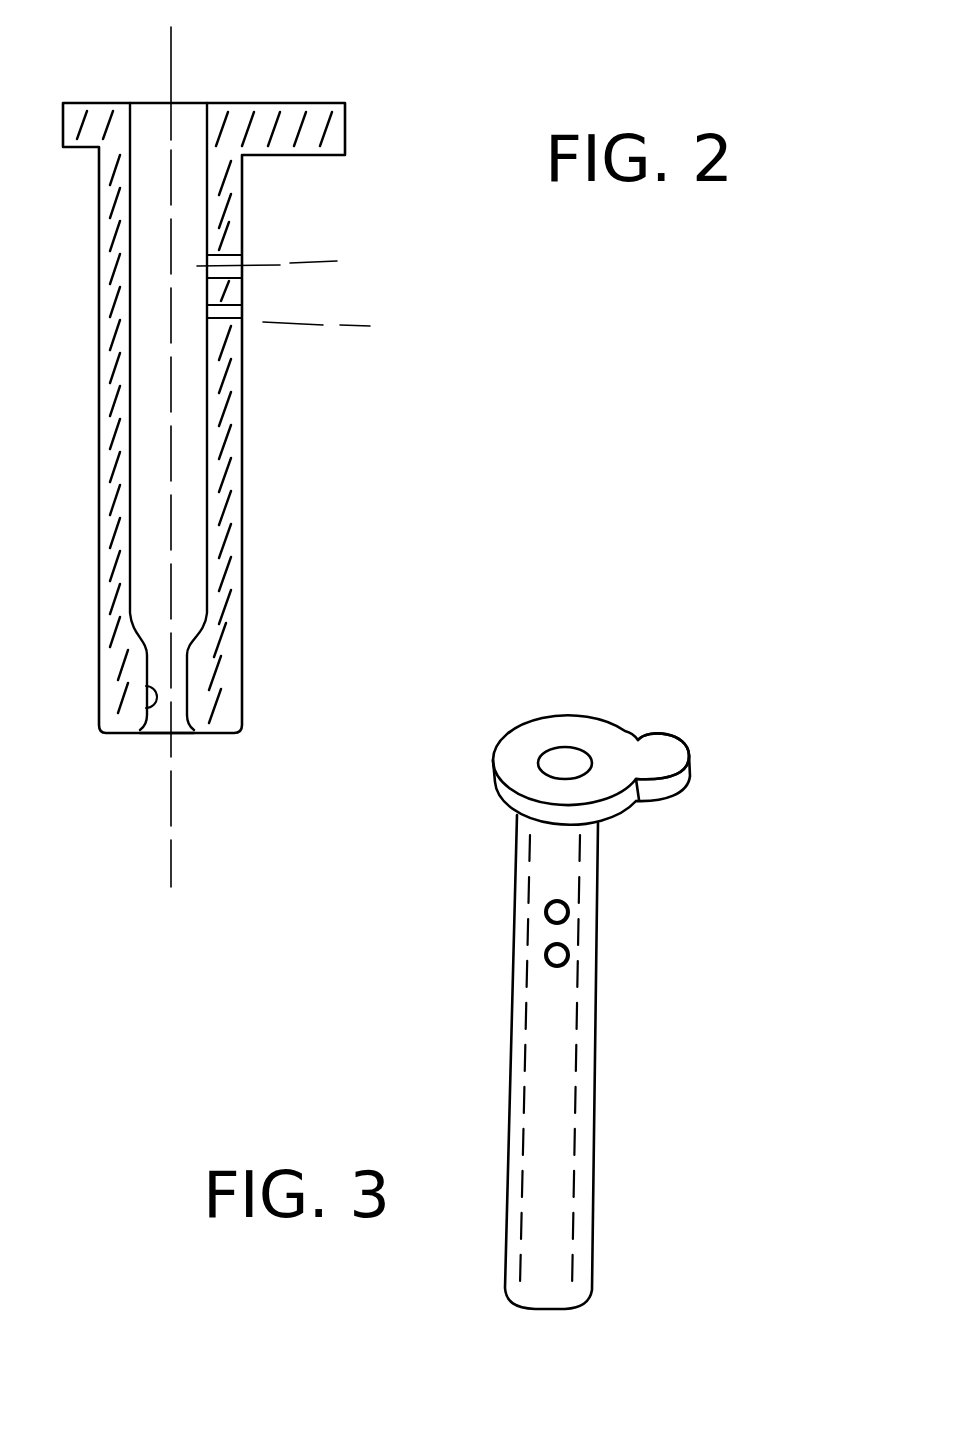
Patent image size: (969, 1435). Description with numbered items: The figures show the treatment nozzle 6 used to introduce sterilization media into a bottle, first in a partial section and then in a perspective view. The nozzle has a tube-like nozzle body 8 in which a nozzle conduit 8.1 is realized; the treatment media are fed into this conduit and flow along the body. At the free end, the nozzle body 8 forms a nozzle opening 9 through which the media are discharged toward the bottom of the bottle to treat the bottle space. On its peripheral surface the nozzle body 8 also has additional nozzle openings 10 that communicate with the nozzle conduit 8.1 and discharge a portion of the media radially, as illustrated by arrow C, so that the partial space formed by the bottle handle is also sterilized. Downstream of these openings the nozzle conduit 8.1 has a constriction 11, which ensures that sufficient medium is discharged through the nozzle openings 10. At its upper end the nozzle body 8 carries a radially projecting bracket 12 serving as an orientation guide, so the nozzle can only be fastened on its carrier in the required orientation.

In FIG. 2, the treatment nozzle 6 is at (326, 74).
In FIG. 2, the nozzle body 8 is at (232, 457).
In FIG. 3, the nozzle body 8 is at (592, 1067).
In FIG. 2, the nozzle conduit 8.1 is at (187, 397).
In FIG. 3, the nozzle conduit 8.1 is at (563, 760).
In FIG. 2, the nozzle opening 9 is at (177, 737).
In FIG. 2, the additional nozzle openings 10 is at (237, 263).
In FIG. 3, the additional nozzle openings 10 is at (567, 912).
In FIG. 2, the constriction 11 is at (143, 730).
In FIG. 3, the bracket 12 is at (667, 750).
In FIG. 2, the arrow C is at (347, 253).